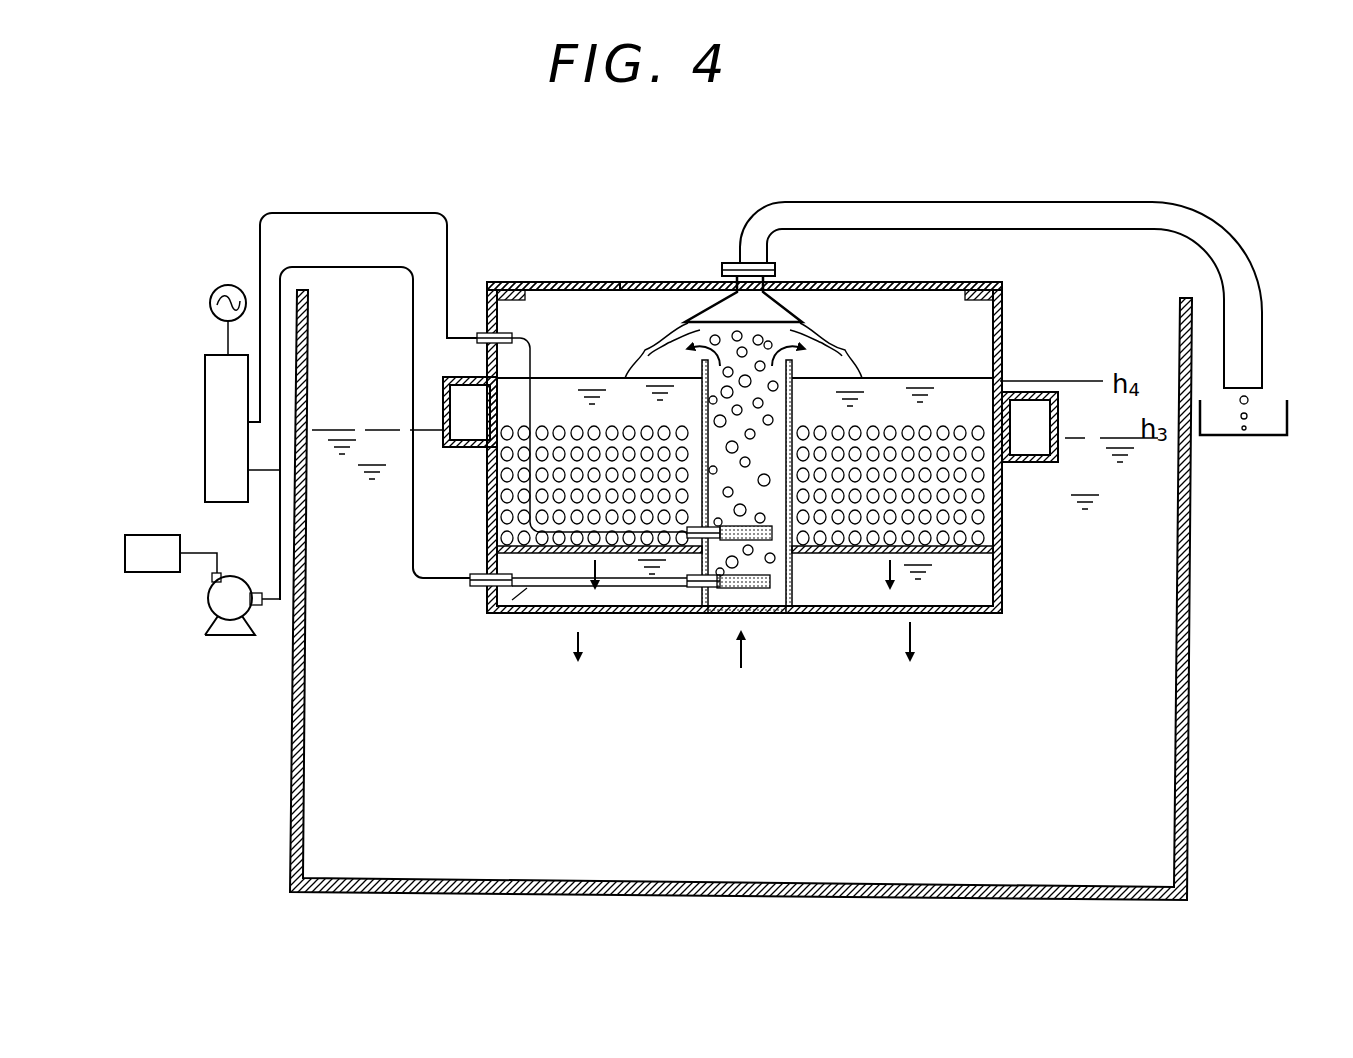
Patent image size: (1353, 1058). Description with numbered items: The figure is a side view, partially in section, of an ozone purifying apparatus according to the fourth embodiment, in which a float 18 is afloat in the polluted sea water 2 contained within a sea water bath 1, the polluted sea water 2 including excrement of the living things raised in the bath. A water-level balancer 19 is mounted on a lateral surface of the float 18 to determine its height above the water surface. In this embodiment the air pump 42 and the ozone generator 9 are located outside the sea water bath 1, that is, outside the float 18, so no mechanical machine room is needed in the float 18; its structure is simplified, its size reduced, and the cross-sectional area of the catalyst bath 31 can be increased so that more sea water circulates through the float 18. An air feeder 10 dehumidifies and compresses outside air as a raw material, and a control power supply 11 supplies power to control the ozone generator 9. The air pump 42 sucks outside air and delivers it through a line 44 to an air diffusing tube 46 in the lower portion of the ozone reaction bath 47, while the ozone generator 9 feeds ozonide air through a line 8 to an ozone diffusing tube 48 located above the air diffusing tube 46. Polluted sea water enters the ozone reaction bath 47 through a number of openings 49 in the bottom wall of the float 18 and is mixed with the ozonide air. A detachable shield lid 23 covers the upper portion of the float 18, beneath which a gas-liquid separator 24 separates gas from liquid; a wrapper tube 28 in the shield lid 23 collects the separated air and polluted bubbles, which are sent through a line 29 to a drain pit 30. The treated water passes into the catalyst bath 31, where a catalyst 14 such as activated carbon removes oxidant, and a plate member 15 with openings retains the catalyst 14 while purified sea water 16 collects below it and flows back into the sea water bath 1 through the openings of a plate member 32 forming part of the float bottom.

The sea water bath 1 is at (1195, 625).
The polluted sea water 2 is at (355, 428).
The line 8 is at (375, 213).
The ozone generator 9 is at (205, 420).
The air feeder 10 is at (155, 535).
The control power supply 11 is at (218, 292).
The catalyst 14 is at (975, 490).
The plate member 15 is at (1003, 548).
The purified sea water 16 is at (975, 595).
The float 18 is at (1003, 318).
The water-level balancer 19 is at (1040, 393).
The shield lid 23 is at (560, 282).
The gas-liquid separator 24 is at (660, 290).
The wrapper tube 28 is at (805, 318).
The line 29 is at (905, 202).
The drain pit 30 is at (1268, 395).
The catalyst bath 31 is at (580, 380).
The plate member 32 is at (548, 618).
The air pump 42 is at (210, 605).
The line 44 is at (345, 267).
The air diffusing tube 46 is at (760, 590).
The ozone reaction bath 47 is at (775, 372).
The ozone diffusing tube 48 is at (790, 560).
The openings 49 is at (718, 618).